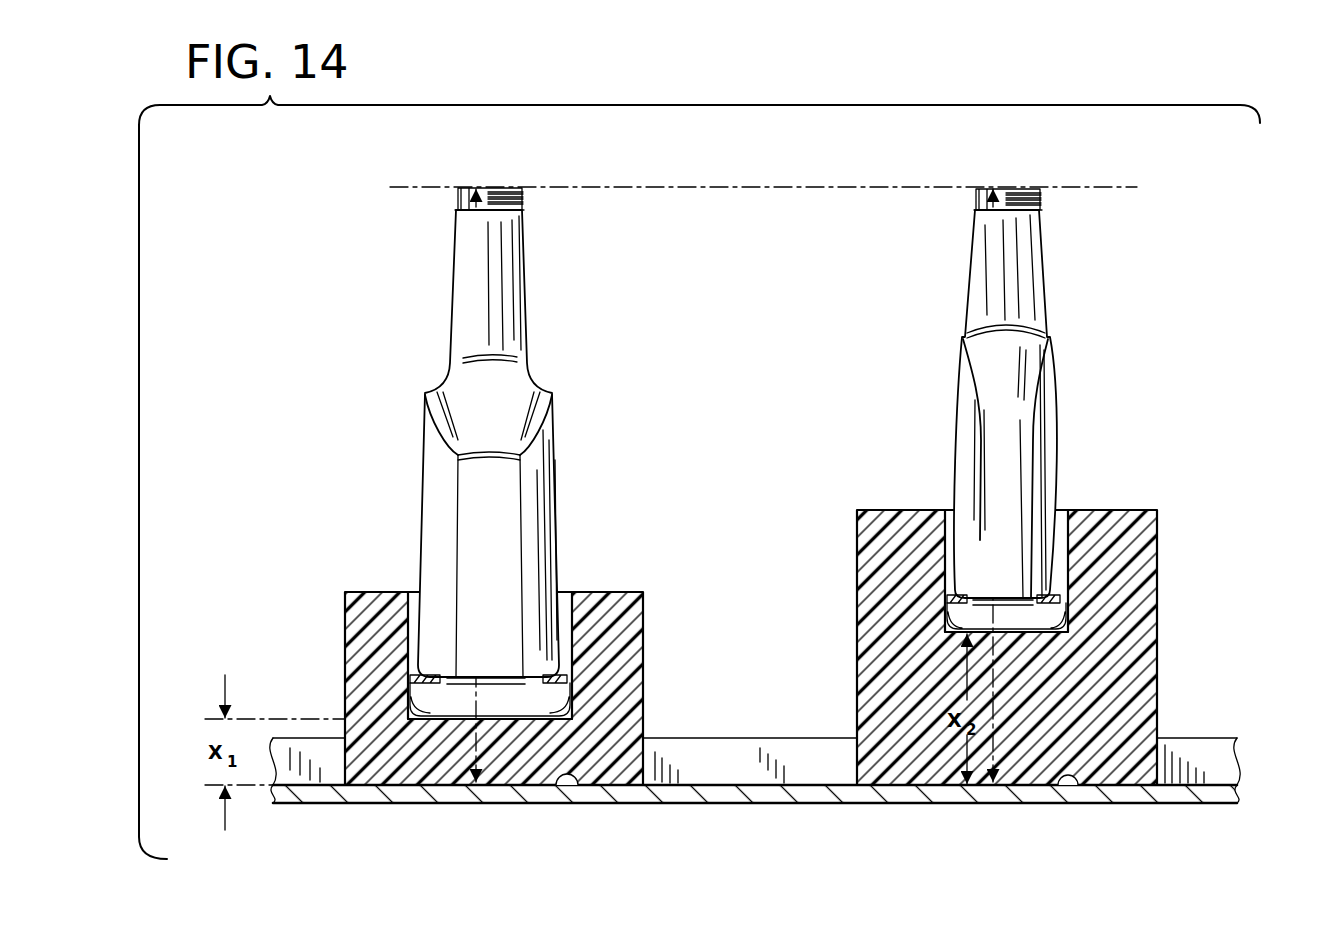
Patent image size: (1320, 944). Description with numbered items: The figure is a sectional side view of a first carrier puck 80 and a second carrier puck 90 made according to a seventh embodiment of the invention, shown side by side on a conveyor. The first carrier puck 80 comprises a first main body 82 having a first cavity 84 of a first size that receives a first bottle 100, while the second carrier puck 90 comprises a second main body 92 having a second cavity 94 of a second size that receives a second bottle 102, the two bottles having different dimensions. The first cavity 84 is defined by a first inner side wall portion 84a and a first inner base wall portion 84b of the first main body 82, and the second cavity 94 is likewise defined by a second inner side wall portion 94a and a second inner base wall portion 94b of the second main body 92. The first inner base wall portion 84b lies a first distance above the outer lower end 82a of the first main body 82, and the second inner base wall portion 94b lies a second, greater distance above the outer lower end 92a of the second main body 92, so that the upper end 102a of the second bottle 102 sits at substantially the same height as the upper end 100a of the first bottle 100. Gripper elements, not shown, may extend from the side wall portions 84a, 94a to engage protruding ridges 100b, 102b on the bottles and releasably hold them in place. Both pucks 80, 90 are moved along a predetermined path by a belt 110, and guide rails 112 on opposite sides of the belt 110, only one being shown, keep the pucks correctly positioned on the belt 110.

The first carrier puck 80 is at (533, 694).
The first main body 82 is at (636, 632).
The outer lower end 82a is at (575, 786).
The first cavity 84 is at (572, 607).
The first inner side wall portion 84a is at (408, 617).
The first inner base wall portion 84b is at (545, 716).
The second carrier puck 90 is at (1013, 649).
The second main body 92 is at (1152, 578).
The outer lower end 92a is at (1078, 780).
The second cavity 94 is at (1067, 533).
The second inner side wall portion 94a is at (945, 537).
The second inner base wall portion 94b is at (950, 632).
The first bottle 100 is at (500, 427).
The upper end 100a is at (485, 190).
The protruding ridges 100b is at (417, 682).
The second bottle 102 is at (1008, 387).
The upper end 102a is at (1010, 191).
The protruding ridges 102b is at (948, 590).
The belt 110 is at (1175, 793).
The guide rails 112 is at (1200, 750).